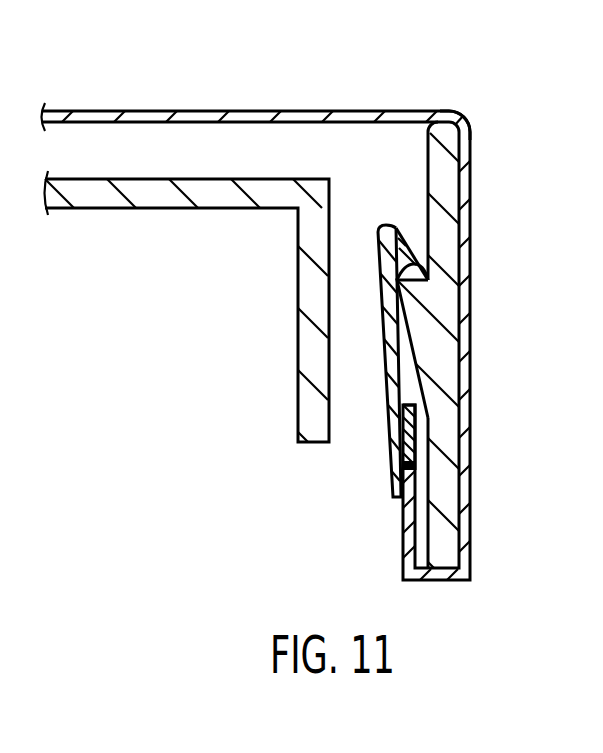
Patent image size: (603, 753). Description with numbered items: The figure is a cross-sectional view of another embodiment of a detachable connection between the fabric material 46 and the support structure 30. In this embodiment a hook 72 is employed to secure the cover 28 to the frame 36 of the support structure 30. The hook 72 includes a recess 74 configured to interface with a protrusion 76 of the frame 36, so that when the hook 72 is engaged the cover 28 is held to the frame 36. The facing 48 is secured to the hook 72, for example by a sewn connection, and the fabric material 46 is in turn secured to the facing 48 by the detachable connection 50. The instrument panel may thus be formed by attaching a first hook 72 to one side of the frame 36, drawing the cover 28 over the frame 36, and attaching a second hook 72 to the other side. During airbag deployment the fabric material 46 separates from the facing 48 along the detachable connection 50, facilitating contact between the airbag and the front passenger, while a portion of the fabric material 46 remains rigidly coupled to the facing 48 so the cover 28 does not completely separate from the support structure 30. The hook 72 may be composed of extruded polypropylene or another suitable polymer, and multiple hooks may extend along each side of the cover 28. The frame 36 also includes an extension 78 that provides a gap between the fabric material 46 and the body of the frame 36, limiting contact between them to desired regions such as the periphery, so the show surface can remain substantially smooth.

The cover 28 is at (481, 86).
The support structure 30 is at (222, 268).
The frame 36 is at (445, 189).
The fabric material 46 is at (470, 498).
The facing 48 is at (405, 466).
The detachable connection 50 is at (414, 465).
The hook 72 is at (378, 268).
The recess 74 is at (400, 263).
The protrusion 76 is at (403, 279).
The extension 78 is at (447, 110).